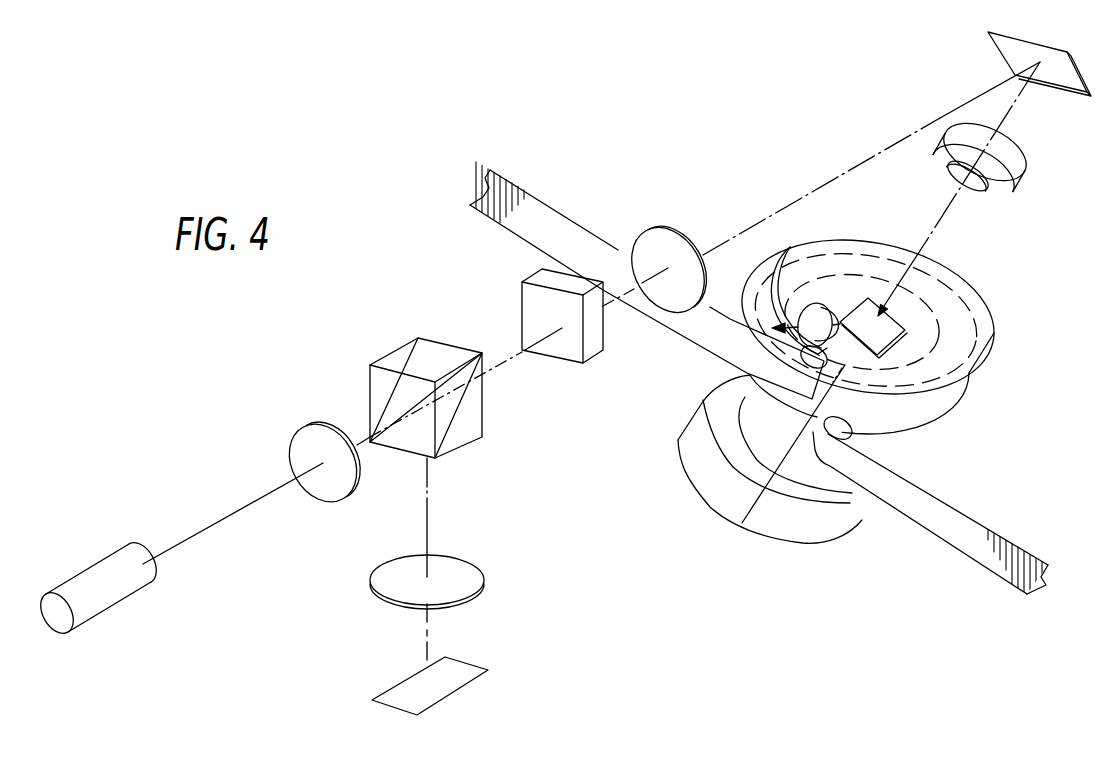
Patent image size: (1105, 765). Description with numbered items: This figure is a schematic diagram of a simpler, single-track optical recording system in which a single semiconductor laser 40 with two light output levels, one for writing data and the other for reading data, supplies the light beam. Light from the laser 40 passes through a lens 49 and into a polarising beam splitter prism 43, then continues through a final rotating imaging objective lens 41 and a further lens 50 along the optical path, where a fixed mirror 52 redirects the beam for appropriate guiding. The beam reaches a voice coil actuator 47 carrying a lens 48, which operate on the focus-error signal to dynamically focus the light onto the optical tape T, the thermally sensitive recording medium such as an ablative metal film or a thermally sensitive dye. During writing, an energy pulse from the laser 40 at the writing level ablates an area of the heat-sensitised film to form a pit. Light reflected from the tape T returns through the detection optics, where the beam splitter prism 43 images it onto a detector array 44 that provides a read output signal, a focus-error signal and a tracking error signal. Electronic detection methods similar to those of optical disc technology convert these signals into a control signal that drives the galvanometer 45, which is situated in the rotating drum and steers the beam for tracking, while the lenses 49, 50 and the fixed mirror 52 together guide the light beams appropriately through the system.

The laser 40 is at (125, 593).
The lens 49 is at (302, 442).
The polarising beam splitter prism 43 is at (468, 435).
The detector array 44 is at (455, 685).
The final rotating imaging objective lens 41 is at (572, 355).
The optical tape T is at (549, 218).
The lens 50 is at (673, 228).
The galvanometer 45 is at (903, 327).
The voice coil actuator 47 is at (990, 202).
The lens 48 is at (985, 173).
The fixed mirror 52 is at (1062, 85).